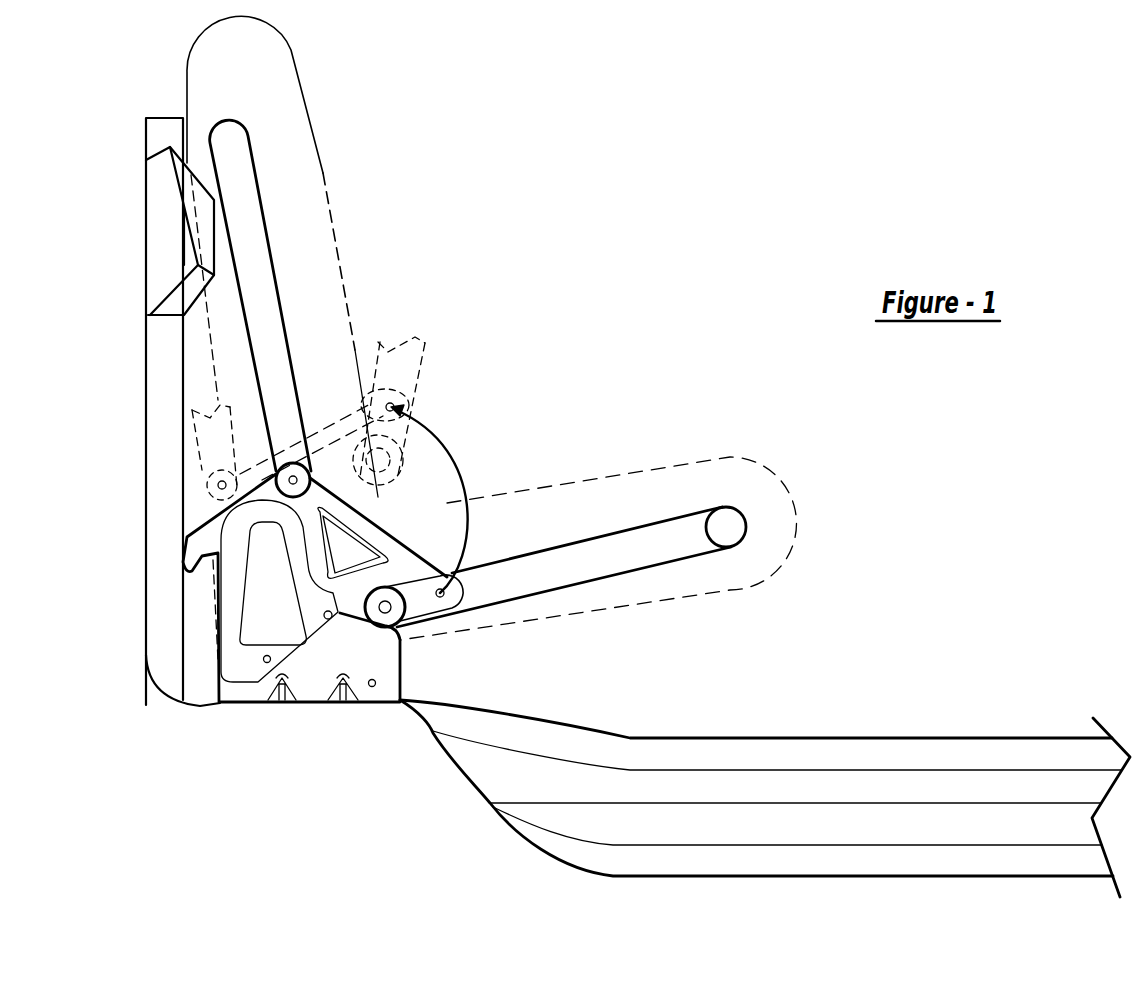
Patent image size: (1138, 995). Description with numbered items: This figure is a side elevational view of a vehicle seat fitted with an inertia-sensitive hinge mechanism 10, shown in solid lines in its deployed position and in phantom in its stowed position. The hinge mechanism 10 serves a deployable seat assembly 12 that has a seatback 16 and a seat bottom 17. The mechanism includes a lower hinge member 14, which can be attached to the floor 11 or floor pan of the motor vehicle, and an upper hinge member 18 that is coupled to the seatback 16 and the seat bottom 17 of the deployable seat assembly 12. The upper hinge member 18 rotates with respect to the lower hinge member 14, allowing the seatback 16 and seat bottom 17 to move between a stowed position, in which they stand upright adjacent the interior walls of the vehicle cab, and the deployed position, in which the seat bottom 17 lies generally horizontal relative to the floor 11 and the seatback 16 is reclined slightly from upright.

The inertia-sensitive hinge mechanism 10 is at (402, 497).
The floor 11 is at (437, 740).
The deployable seat assembly 12 is at (515, 353).
The lower hinge member 14 is at (235, 693).
The seatback 16 is at (252, 238).
The seat bottom 17 is at (647, 543).
The upper hinge member 18 is at (403, 560).